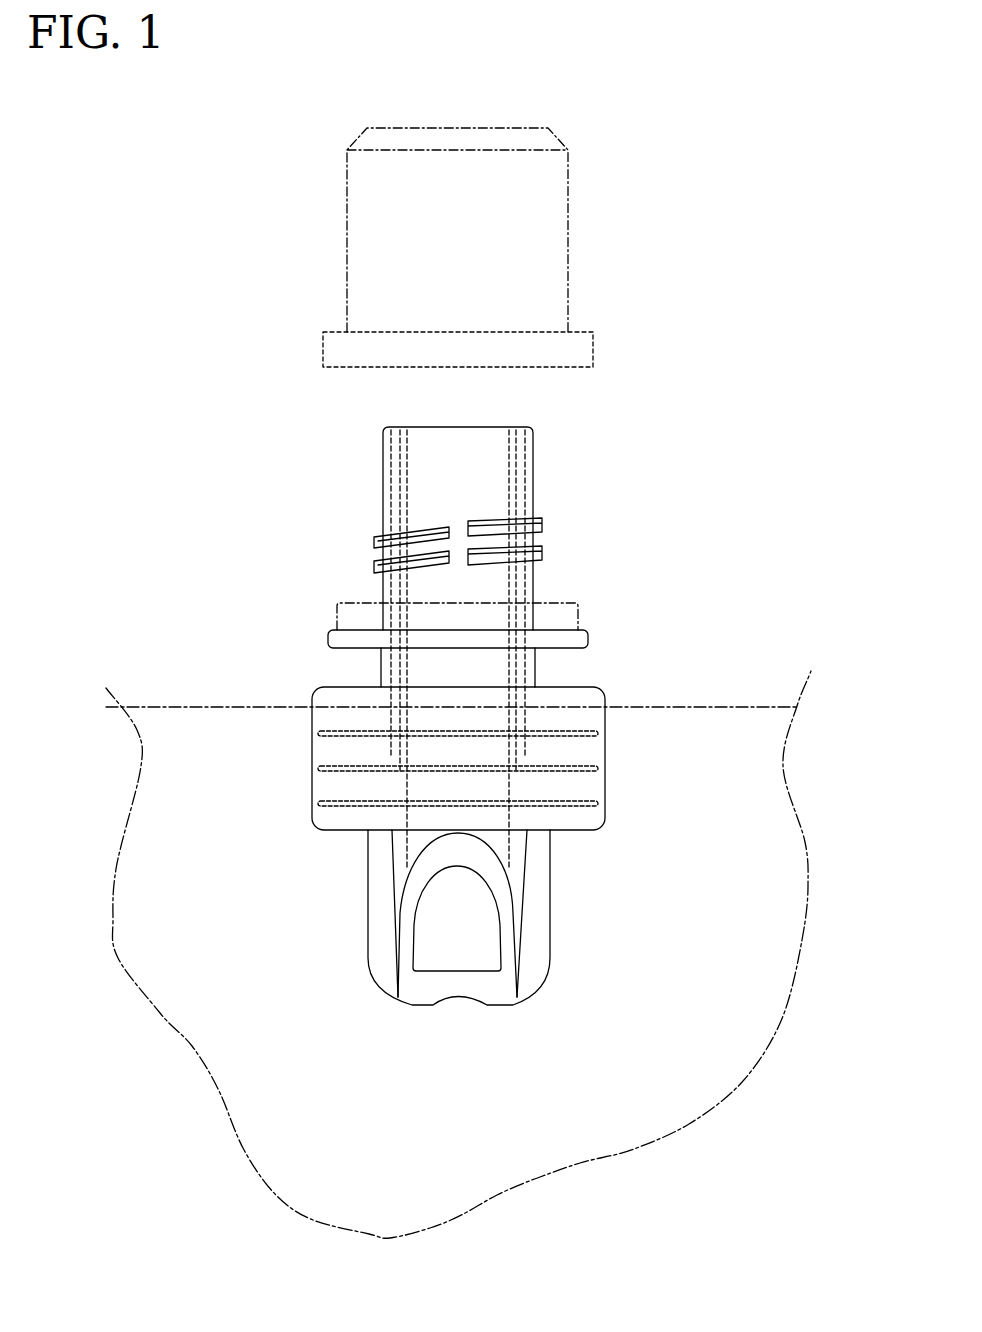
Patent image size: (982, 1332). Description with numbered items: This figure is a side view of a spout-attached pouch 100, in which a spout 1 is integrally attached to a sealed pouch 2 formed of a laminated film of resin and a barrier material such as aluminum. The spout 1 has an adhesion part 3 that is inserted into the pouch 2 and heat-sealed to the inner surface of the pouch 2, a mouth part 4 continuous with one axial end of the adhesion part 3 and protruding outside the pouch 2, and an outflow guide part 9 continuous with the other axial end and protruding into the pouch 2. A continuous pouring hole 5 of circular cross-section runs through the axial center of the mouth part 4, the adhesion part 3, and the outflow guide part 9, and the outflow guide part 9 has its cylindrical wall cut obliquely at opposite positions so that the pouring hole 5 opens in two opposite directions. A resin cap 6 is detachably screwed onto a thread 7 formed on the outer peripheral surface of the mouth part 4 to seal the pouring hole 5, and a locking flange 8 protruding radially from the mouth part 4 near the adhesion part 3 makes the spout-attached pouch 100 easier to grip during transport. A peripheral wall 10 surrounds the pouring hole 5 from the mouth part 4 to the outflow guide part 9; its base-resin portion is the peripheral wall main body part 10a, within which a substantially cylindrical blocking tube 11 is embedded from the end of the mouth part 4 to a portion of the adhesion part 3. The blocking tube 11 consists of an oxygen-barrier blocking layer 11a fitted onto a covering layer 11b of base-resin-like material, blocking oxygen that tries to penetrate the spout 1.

The spout-attached pouch 100 is at (677, 270).
The spout 1 is at (582, 455).
The pouch 2 is at (727, 705).
The adhesion part 3 is at (320, 723).
The mouth part 4 is at (383, 490).
The pouring hole 5 is at (512, 443).
The cap 6 is at (568, 207).
The thread 7 is at (538, 522).
The locking flange 8 is at (578, 612).
The outflow guide part 9 is at (398, 883).
The peripheral wall 10 is at (420, 565).
The peripheral wall main body part 10a is at (385, 588).
The blocking tube 11 is at (356, 515).
The blocking layer 11a is at (391, 427).
The covering layer 11b is at (400, 427).